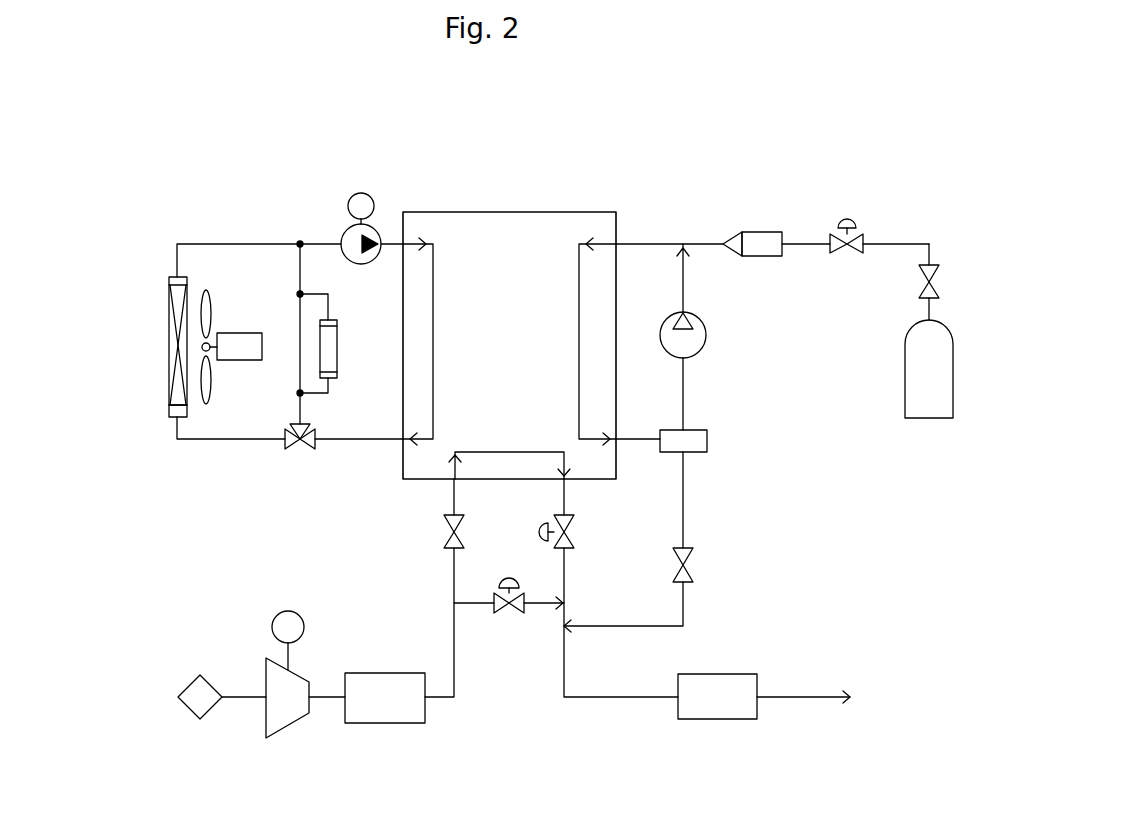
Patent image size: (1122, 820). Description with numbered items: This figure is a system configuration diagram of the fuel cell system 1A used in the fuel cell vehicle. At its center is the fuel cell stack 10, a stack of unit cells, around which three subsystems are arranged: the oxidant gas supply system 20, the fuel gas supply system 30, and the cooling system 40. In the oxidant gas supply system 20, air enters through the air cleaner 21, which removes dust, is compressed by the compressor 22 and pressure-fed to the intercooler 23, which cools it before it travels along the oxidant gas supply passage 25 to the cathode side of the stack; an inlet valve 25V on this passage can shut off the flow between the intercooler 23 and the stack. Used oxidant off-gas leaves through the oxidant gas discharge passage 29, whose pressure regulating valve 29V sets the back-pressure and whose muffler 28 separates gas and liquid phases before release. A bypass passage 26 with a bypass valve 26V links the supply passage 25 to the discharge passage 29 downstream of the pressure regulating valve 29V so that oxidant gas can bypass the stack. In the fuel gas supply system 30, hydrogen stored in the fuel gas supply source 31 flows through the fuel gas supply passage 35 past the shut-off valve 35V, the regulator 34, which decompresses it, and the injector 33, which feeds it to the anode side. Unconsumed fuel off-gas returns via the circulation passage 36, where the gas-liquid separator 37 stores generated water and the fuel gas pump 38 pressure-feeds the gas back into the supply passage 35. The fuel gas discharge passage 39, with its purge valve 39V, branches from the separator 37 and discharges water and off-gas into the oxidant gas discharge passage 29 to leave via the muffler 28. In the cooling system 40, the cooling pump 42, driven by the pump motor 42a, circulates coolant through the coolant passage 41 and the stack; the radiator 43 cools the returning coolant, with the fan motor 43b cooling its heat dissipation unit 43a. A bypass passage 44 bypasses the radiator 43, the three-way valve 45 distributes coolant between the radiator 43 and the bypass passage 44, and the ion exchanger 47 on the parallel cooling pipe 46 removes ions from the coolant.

The fuel cell system 1A is at (872, 167).
The fuel cell stack 10 is at (412, 212).
The oxidant gas supply system 20 is at (252, 610).
The air cleaner 21 is at (195, 680).
The compressor 22 is at (291, 718).
The intercooler 23 is at (388, 715).
The oxidant gas supply passage 25 is at (454, 630).
The inlet valve 25V is at (444, 532).
The bypass passage 26 is at (547, 606).
The bypass valve 26V is at (502, 616).
The muffler 28 is at (712, 712).
The oxidant gas discharge passage 29 is at (566, 660).
The pressure regulating valve 29V is at (576, 532).
The fuel gas supply system 30 is at (813, 447).
The fuel gas supply source 31 is at (905, 395).
The injector 33 is at (762, 232).
The regulator 34 is at (847, 256).
The fuel gas supply passage 35 is at (694, 240).
The shut-off valve 35V is at (919, 290).
The circulation passage 36 is at (684, 392).
The gas-liquid separator 37 is at (707, 443).
The fuel gas pump 38 is at (707, 334).
The fuel gas discharge passage 39 is at (684, 612).
The purge valve 39V is at (694, 565).
The cooling system 40 is at (200, 190).
The coolant passage 41 is at (272, 243).
The cooling pump 42 is at (358, 262).
The pump motor 42a is at (355, 193).
The radiator 43 is at (162, 318).
The heat dissipation unit 43a is at (167, 412).
The fan motor 43b is at (253, 333).
The bypass passage 44 is at (300, 405).
The three-way valve 45 is at (302, 452).
The cooling pipe 46 is at (337, 386).
The ion exchanger 47 is at (337, 349).